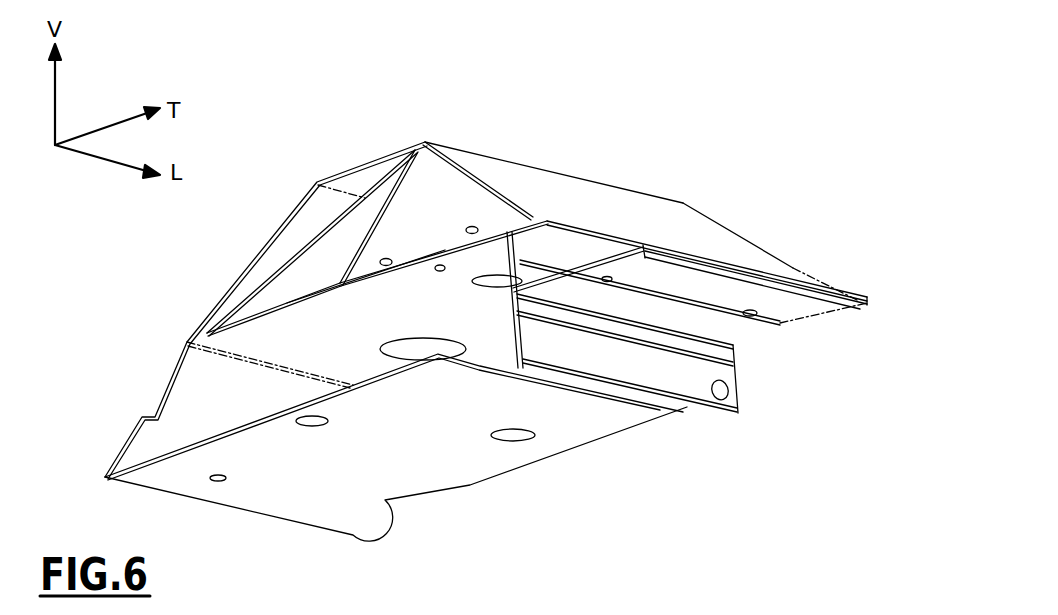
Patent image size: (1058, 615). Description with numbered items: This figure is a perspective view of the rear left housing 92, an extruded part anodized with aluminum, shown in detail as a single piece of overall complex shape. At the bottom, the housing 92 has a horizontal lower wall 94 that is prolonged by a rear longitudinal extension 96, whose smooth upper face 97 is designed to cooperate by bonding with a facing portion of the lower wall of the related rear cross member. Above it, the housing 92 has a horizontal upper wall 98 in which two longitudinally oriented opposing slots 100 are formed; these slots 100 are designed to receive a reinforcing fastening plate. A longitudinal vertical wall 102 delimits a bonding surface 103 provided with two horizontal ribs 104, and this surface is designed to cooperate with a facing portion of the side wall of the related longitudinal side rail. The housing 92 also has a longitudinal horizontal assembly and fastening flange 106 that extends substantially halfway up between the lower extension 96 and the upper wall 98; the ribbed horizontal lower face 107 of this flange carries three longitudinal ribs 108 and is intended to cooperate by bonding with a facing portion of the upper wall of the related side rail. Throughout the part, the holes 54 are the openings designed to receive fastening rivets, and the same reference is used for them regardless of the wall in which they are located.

The holes 54 is at (222, 485).
The housing 92 is at (563, 160).
The horizontal lower wall 94 is at (297, 477).
The rear longitudinal extension 96 is at (245, 427).
The upper face 97 is at (292, 408).
The horizontal upper wall 98 is at (357, 277).
The slots 100 is at (470, 230).
The longitudinal vertical wall 102 is at (497, 352).
The bonding surface 103 is at (697, 380).
The horizontal ribs 104 is at (733, 363).
The assembly and fastening flange 106 is at (827, 280).
The ribbed horizontal lower face 107 is at (807, 310).
The longitudinal ribs 108 is at (680, 322).